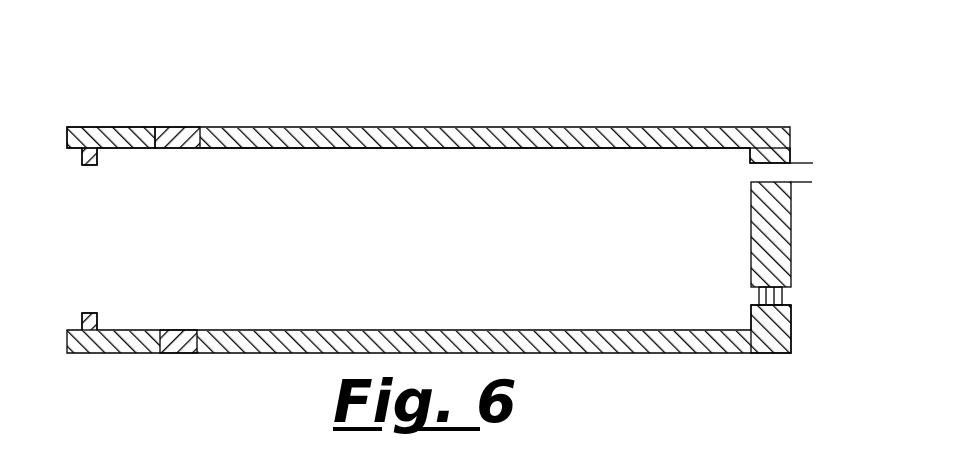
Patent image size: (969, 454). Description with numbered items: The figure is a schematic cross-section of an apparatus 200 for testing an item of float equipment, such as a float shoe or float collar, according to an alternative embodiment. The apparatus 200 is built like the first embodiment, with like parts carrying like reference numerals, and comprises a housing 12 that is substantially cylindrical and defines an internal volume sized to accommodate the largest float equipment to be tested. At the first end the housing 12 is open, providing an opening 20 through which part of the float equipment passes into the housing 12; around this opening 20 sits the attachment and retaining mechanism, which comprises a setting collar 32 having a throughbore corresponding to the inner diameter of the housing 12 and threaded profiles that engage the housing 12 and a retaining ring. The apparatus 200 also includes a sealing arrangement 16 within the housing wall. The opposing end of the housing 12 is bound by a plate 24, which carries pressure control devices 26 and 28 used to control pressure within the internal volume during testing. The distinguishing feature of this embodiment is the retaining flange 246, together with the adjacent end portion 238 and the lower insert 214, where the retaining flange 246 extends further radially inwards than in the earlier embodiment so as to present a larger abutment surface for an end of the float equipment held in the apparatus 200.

The apparatus 200 is at (538, 103).
The housing 12 is at (660, 128).
The sealing arrangement 16 is at (277, 128).
The setting collar 32 is at (183, 128).
The end flange 238 is at (67, 143).
The retaining flange 246 is at (94, 146).
The pressure control device 26 is at (792, 168).
The opening 20 is at (87, 237).
The insert 214 is at (177, 367).
The plate 24 is at (792, 315).
The pressure control device 28 is at (788, 296).